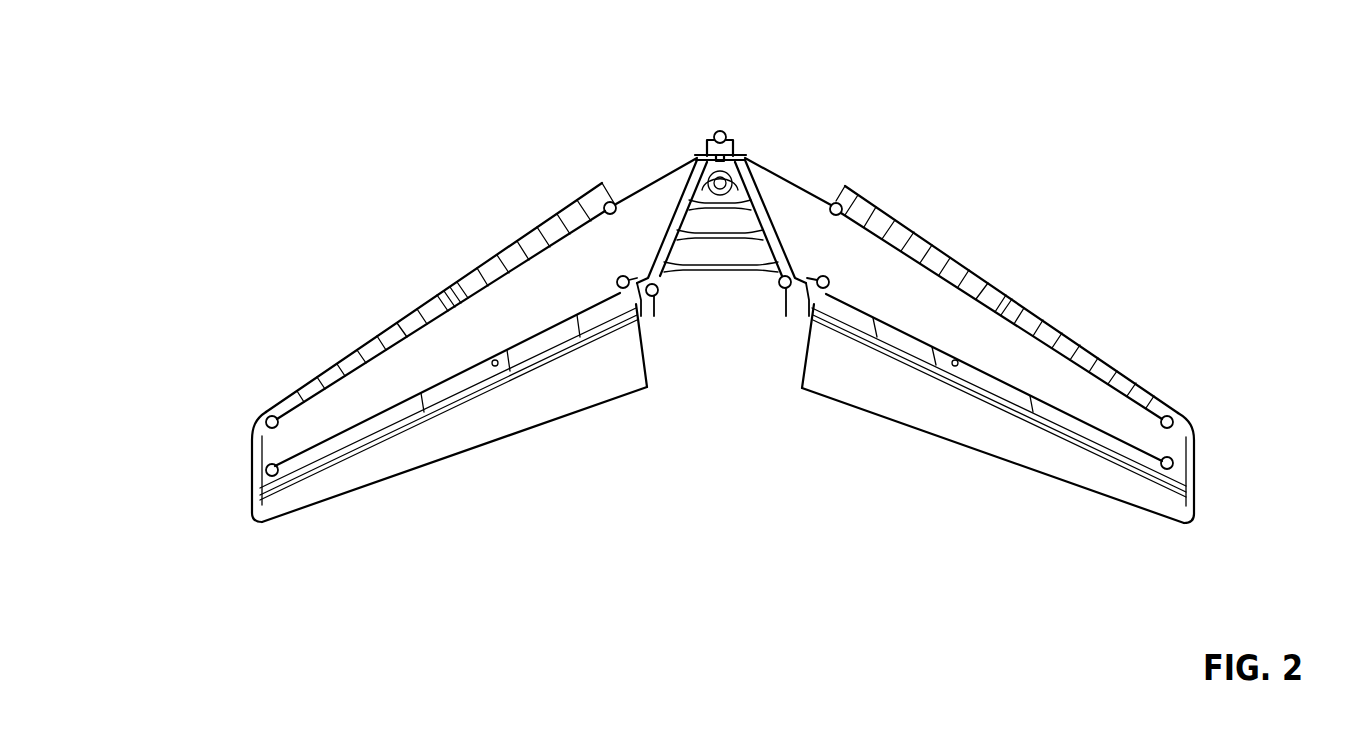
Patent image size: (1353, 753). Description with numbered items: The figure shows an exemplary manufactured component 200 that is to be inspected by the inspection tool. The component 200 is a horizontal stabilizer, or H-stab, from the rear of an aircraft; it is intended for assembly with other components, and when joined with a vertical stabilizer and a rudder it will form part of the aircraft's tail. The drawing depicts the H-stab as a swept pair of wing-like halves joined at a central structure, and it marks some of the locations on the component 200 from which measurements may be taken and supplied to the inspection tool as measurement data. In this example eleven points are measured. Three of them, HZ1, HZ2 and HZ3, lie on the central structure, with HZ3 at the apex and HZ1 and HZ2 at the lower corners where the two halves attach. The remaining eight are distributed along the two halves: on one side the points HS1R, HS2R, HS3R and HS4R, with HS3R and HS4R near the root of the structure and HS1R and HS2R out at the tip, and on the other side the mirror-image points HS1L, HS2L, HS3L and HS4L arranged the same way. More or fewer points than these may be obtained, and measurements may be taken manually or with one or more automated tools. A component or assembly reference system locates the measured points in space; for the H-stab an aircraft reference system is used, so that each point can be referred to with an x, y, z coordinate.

The component 200 is at (614, 456).
The measurement point HZ1 is at (652, 297).
The measurement point HZ2 is at (785, 289).
The measurement point HZ3 is at (721, 130).
The measurement point HS1R is at (272, 415).
The measurement point HS2R is at (266, 468).
The measurement point HS3R is at (617, 284).
The measurement point HS4R is at (610, 201).
The measurement point HS1L is at (1167, 415).
The measurement point HS2L is at (1174, 463).
The measurement point HS3L is at (829, 284).
The measurement point HS4L is at (836, 202).